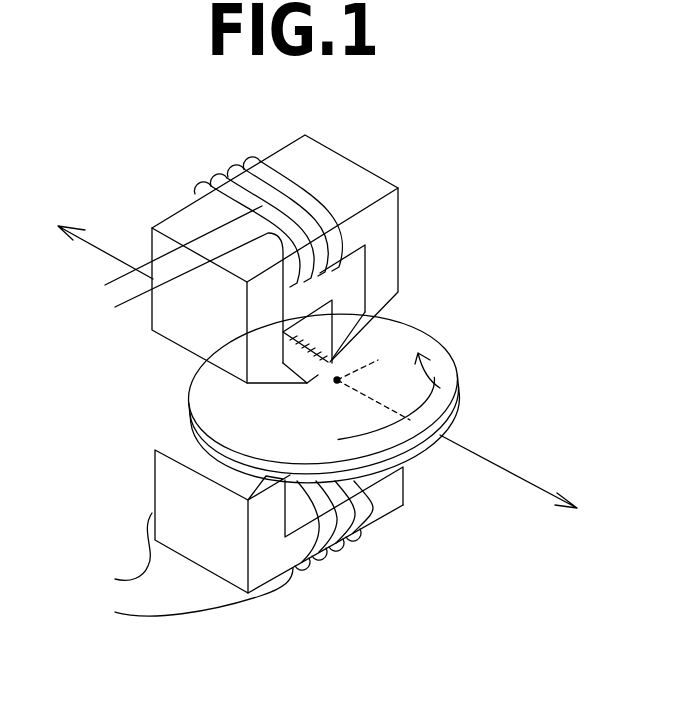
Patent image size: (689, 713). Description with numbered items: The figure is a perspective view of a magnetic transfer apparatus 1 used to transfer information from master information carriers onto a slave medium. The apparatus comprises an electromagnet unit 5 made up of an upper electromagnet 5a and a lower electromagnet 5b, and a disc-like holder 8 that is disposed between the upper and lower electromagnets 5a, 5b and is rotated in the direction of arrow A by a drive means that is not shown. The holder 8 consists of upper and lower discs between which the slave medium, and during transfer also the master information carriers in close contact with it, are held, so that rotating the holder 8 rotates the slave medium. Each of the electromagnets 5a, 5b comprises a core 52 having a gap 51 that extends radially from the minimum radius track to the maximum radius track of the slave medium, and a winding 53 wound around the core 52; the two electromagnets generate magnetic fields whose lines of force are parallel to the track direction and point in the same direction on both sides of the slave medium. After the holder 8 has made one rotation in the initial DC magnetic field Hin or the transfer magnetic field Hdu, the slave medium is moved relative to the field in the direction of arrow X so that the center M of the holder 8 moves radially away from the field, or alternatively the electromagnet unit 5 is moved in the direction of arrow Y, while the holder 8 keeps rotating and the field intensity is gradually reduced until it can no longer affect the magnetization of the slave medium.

The magnetic head device 1 is at (148, 154).
The electromagnet unit 5 is at (502, 163).
The upper electromagnet 5a is at (352, 168).
The lower electromagnet 5b is at (388, 502).
The gap 51 is at (190, 388).
The core 52 is at (390, 262).
The winding 53 is at (260, 157).
The holder 8 is at (481, 345).
The center of the holder M is at (335, 383).
The initial DC magnetic field Hin is at (307, 350).
The transfer magnetic field Hdu is at (373, 363).
The direction of rotation of the holder A is at (440, 388).
The radial direction of movement of the slave medium X is at (467, 452).
The direction of movement of the electromagnet units Y is at (99, 239).